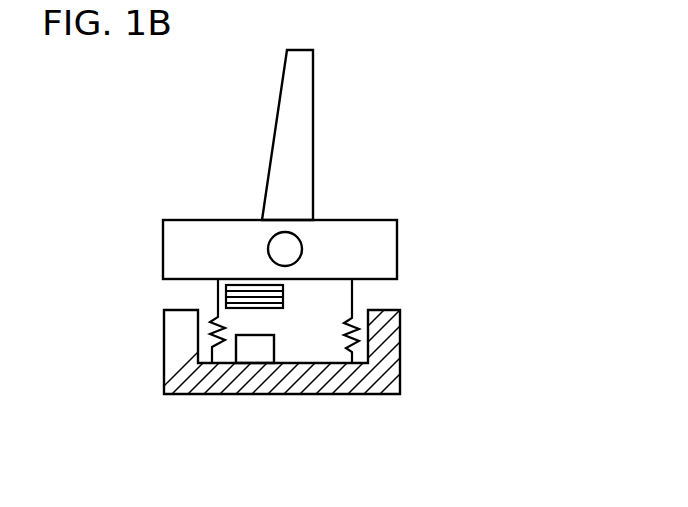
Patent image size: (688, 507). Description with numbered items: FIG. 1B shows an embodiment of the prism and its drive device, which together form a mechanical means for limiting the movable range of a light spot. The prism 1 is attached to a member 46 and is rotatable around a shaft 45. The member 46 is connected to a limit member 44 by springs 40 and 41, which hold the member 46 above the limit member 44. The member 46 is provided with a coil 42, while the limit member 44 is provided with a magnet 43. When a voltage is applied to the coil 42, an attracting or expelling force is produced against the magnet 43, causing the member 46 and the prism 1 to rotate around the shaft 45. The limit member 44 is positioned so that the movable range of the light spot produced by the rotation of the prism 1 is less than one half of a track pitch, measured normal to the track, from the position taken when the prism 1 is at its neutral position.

The prism 1 is at (313, 97).
The spring 40 is at (353, 320).
The spring 41 is at (212, 342).
The coil 42 is at (226, 295).
The magnet 43 is at (250, 348).
The limit member 44 is at (383, 337).
The shaft 45 is at (302, 243).
The member 46 is at (380, 240).